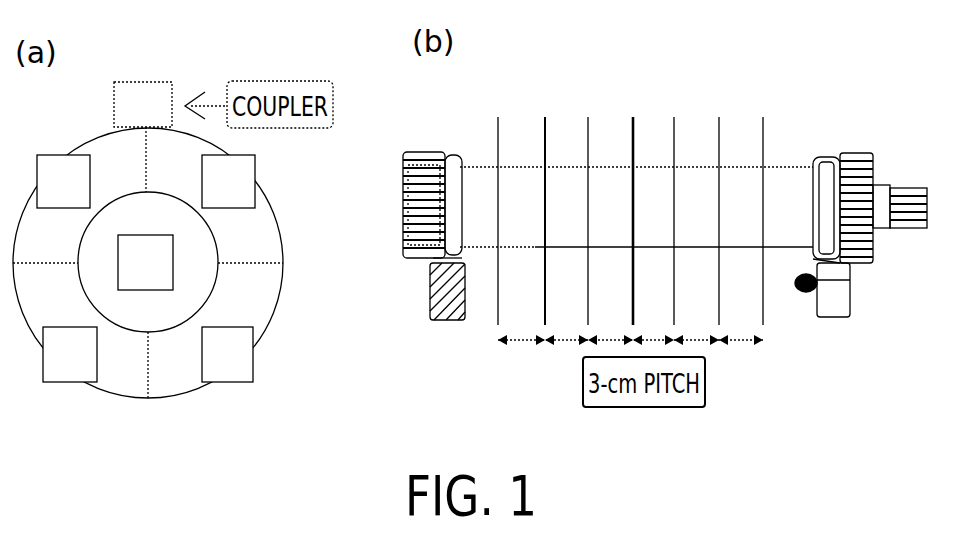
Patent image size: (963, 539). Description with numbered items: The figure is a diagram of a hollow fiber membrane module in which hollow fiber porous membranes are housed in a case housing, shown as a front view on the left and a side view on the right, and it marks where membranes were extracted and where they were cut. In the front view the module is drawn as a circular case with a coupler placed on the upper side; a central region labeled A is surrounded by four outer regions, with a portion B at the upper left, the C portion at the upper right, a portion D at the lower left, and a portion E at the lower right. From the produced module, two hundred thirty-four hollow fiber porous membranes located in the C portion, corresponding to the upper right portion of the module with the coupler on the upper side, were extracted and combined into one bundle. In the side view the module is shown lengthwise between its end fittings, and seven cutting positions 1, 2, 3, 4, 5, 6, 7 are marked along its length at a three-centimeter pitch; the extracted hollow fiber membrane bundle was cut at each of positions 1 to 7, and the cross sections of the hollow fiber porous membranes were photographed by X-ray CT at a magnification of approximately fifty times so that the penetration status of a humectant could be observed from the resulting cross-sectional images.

The center coupler position A is at (145, 262).
The coupler position B is at (63, 181).
The C portion C is at (228, 181).
The coupler position D is at (70, 354).
The coupler position E is at (227, 354).
The cutting position 1 is at (761, 197).
The cutting position 2 is at (717, 197).
The cutting position 3 is at (673, 197).
The cutting position 4 is at (632, 197).
The cutting position 5 is at (588, 197).
The cutting position 6 is at (545, 197).
The cutting position 7 is at (492, 197).